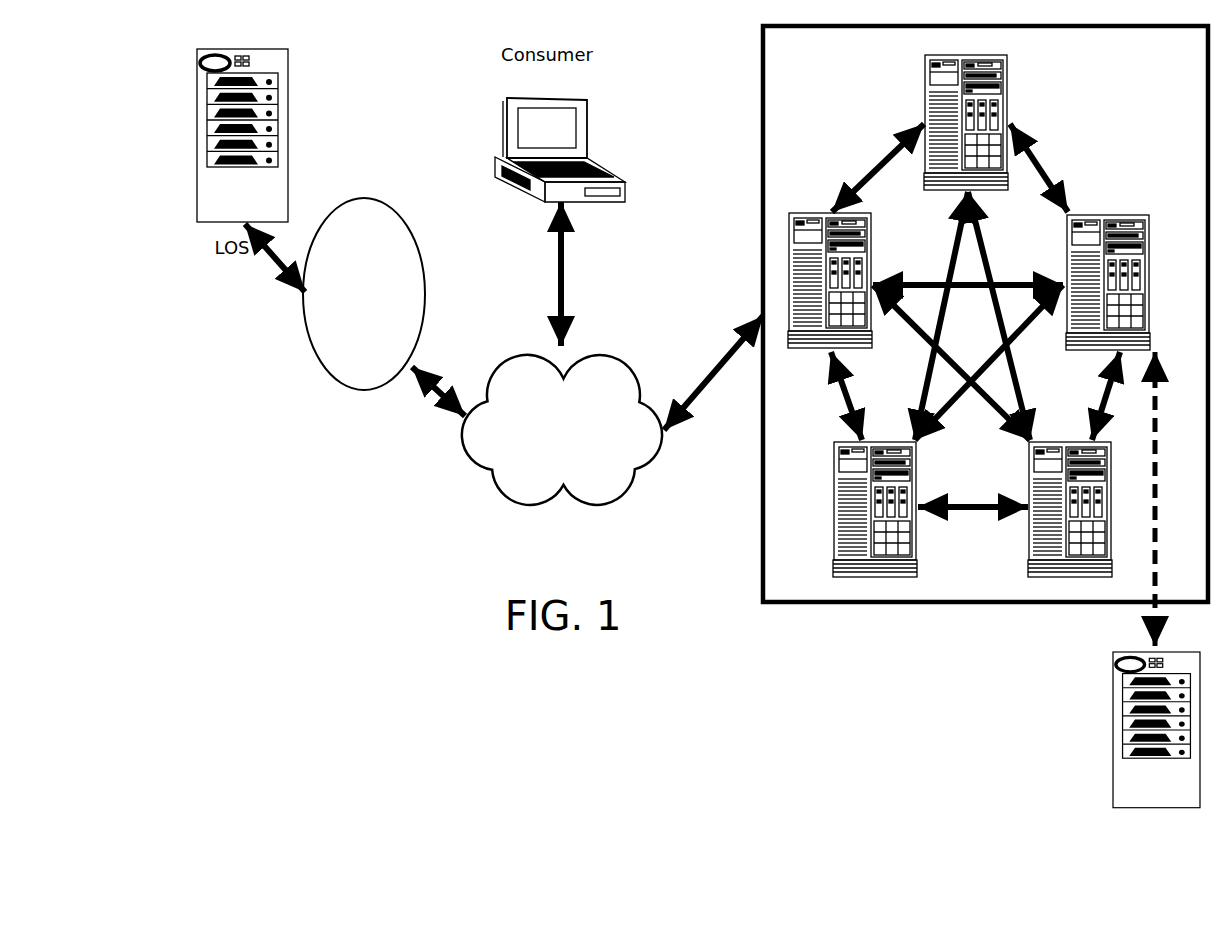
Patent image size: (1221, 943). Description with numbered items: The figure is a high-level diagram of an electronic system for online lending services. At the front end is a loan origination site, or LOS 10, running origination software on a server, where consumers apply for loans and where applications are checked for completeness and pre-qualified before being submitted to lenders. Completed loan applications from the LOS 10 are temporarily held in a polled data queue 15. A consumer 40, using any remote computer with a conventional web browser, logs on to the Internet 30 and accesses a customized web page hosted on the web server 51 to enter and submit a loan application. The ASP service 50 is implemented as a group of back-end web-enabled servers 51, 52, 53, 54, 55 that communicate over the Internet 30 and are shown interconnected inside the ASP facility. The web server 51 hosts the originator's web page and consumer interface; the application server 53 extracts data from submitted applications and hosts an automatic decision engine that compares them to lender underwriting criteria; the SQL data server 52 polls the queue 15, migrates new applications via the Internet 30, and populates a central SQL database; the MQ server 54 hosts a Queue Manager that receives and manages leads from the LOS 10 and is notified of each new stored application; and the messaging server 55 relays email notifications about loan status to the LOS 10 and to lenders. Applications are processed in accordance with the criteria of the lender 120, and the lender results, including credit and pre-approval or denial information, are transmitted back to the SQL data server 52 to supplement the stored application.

The loan origination site (LOS) 10 is at (230, 135).
The queue 15 is at (353, 272).
The Internet 30 is at (549, 423).
The consumer 40 is at (548, 150).
The ASP service 50 is at (776, 78).
The web server 51 is at (828, 269).
The SQL data server 52 is at (860, 503).
The application server 53 is at (1053, 506).
The MQ server 54 is at (966, 111).
The messaging server 55 is at (1108, 271).
The lender 120 is at (1134, 728).